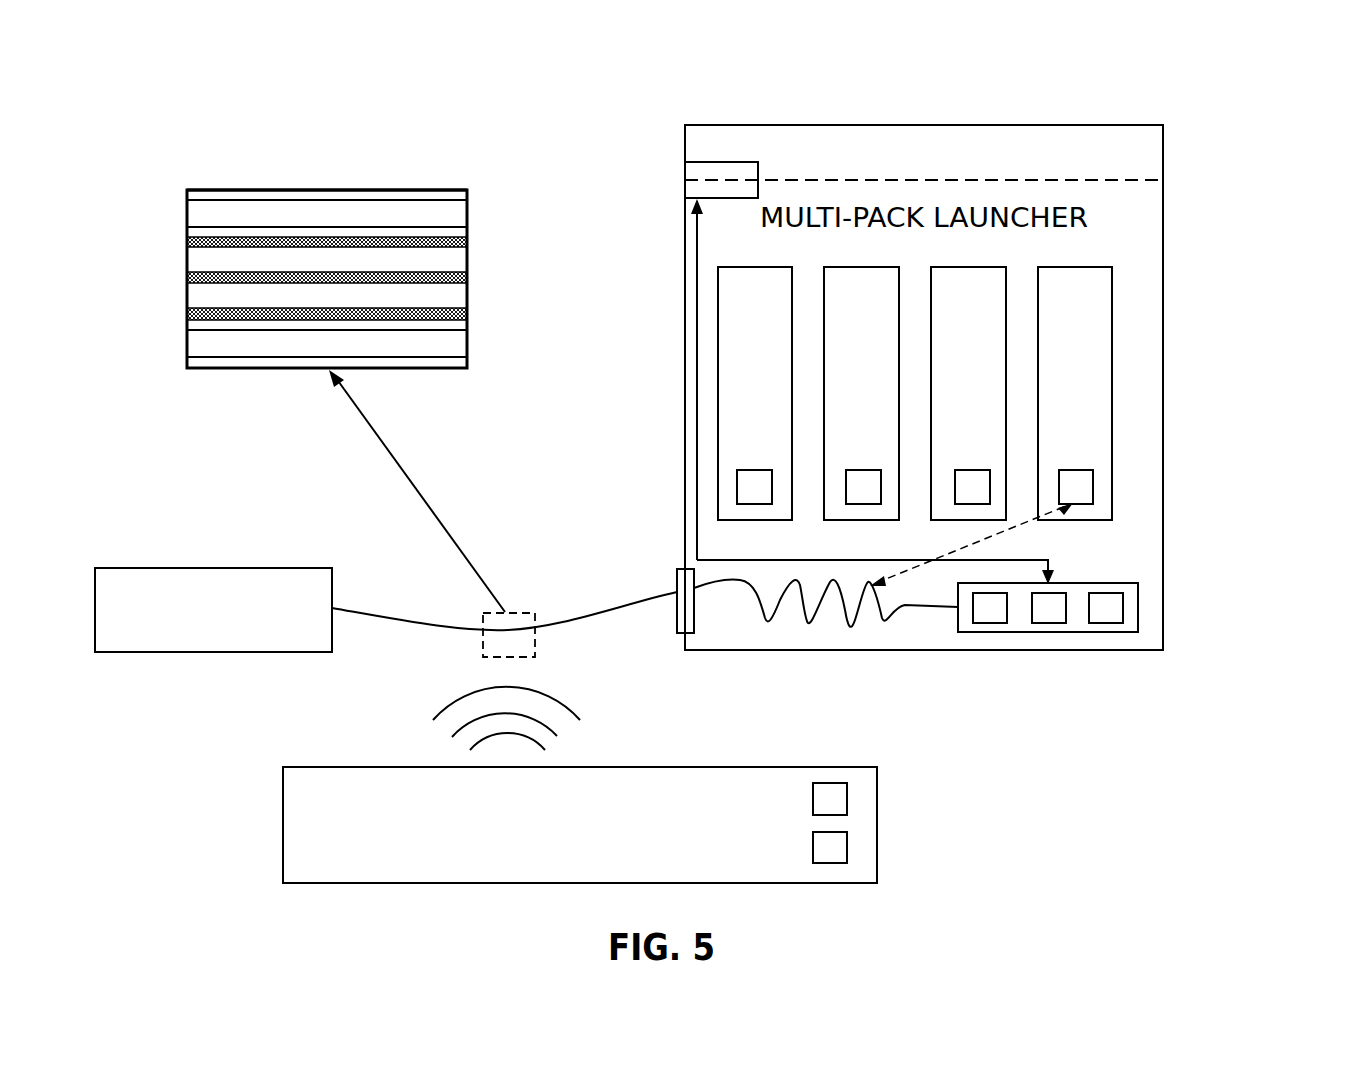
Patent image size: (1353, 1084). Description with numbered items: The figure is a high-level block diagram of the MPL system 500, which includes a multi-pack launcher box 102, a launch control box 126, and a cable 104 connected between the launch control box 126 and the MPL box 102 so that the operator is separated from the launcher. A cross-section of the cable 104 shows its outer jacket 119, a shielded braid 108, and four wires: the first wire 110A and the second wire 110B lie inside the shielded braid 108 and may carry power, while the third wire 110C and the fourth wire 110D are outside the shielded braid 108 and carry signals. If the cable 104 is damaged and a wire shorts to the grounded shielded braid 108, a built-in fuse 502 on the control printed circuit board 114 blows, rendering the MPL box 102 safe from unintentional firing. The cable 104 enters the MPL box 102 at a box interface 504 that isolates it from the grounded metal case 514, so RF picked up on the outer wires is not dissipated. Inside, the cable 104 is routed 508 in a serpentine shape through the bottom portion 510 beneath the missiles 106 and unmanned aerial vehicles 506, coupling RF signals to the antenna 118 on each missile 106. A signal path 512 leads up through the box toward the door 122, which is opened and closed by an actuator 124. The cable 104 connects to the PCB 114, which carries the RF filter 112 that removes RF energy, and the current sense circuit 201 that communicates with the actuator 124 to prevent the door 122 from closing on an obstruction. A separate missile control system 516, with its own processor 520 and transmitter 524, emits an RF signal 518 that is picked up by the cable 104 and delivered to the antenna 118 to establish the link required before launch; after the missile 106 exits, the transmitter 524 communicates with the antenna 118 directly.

The MPL system 500 is at (1222, 92).
The multi-pack launcher box 102 is at (1163, 272).
The door 122 is at (1163, 151).
The actuator 124 is at (683, 176).
The unmanned aerial vehicle 506 is at (1006, 367).
The missile 106 is at (1113, 440).
The antenna 118 is at (1093, 488).
The launch signal path 512 is at (697, 330).
The metal case 514 is at (685, 480).
The bottom portion 510 is at (1003, 537).
The control printed circuit board 114 is at (1138, 612).
The built-in fuse 502 is at (980, 625).
The RF filter 112 is at (1050, 625).
The current sense circuit 201 is at (1113, 625).
The box interface 504 is at (677, 620).
The routing 508 is at (880, 630).
The cable 104 is at (605, 612).
The launch control box 126 is at (213, 653).
The RF signal 518 is at (448, 707).
The missile control system 516 is at (283, 856).
The processor 520 is at (847, 800).
The transmitter 524 is at (847, 850).
The shielded braid 108 is at (187, 240).
The outer jacket 119 is at (440, 188).
The third wire 110C is at (457, 211).
The first wire 110A is at (457, 263).
The second wire 110B is at (457, 296).
The fourth wire 110D is at (457, 342).